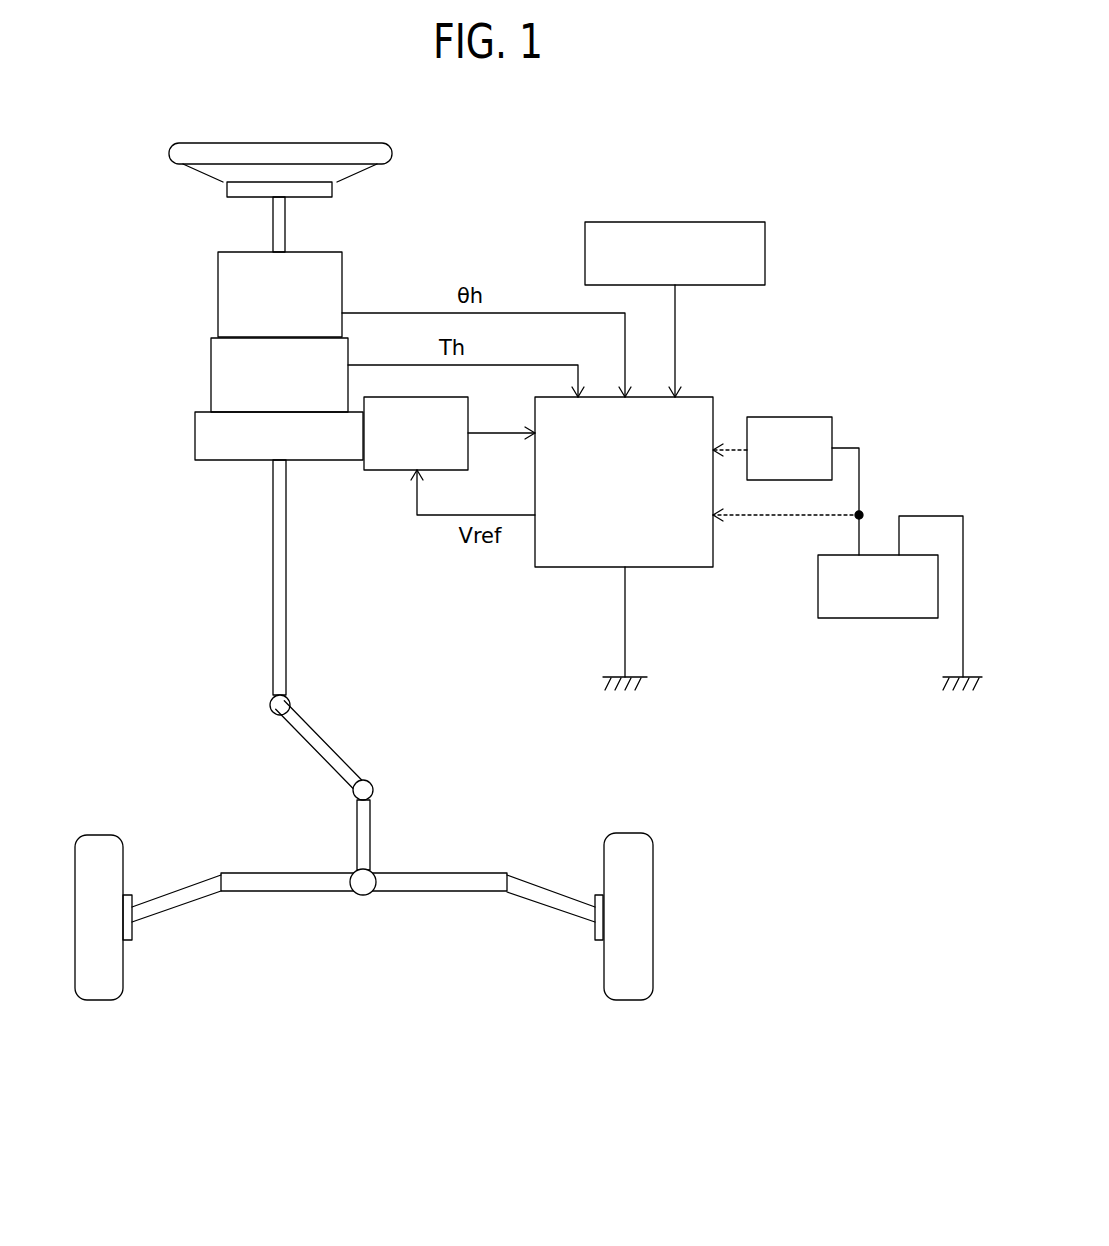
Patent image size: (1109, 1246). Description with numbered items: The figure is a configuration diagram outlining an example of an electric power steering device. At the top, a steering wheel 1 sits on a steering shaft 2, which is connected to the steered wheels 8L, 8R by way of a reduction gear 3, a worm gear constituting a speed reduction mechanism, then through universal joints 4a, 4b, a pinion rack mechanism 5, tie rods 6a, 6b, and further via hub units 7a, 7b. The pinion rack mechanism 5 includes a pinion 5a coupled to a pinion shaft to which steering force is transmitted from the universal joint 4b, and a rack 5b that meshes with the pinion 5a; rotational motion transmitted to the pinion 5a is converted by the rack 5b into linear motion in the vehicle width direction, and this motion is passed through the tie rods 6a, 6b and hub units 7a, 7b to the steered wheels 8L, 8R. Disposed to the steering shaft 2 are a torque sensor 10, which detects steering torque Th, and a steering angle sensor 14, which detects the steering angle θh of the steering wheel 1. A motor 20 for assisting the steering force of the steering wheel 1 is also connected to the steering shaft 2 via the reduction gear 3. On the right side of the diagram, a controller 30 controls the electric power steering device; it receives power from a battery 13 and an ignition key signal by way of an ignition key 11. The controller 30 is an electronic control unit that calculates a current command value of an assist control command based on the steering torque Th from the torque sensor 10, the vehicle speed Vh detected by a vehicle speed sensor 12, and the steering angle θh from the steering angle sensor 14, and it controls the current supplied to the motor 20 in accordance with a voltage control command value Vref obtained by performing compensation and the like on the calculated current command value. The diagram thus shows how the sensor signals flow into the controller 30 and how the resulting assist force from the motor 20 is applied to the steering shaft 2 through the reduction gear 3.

The steering wheel 1 is at (360, 143).
The steering shaft 2 is at (272, 228).
The steering angle sensor 14 is at (218, 306).
The torque sensor 10 is at (211, 372).
The reduction gear 3 is at (195, 437).
The motor 20 is at (388, 471).
The controller 30 is at (703, 397).
The vehicle speed sensor 12 is at (695, 222).
The ignition key 11 is at (797, 417).
The battery 13 is at (860, 619).
The universal joint 4a is at (269, 704).
The universal joint 4b is at (375, 789).
The pinion rack mechanism 5 is at (364, 936).
The pinion 5a is at (357, 914).
The rack 5b is at (284, 893).
The tie rod 6a is at (187, 888).
The tie rod 6b is at (538, 888).
The hub unit 7a is at (134, 930).
The hub unit 7b is at (592, 928).
The steered wheel 8L is at (98, 1007).
The steered wheel 8R is at (627, 1003).